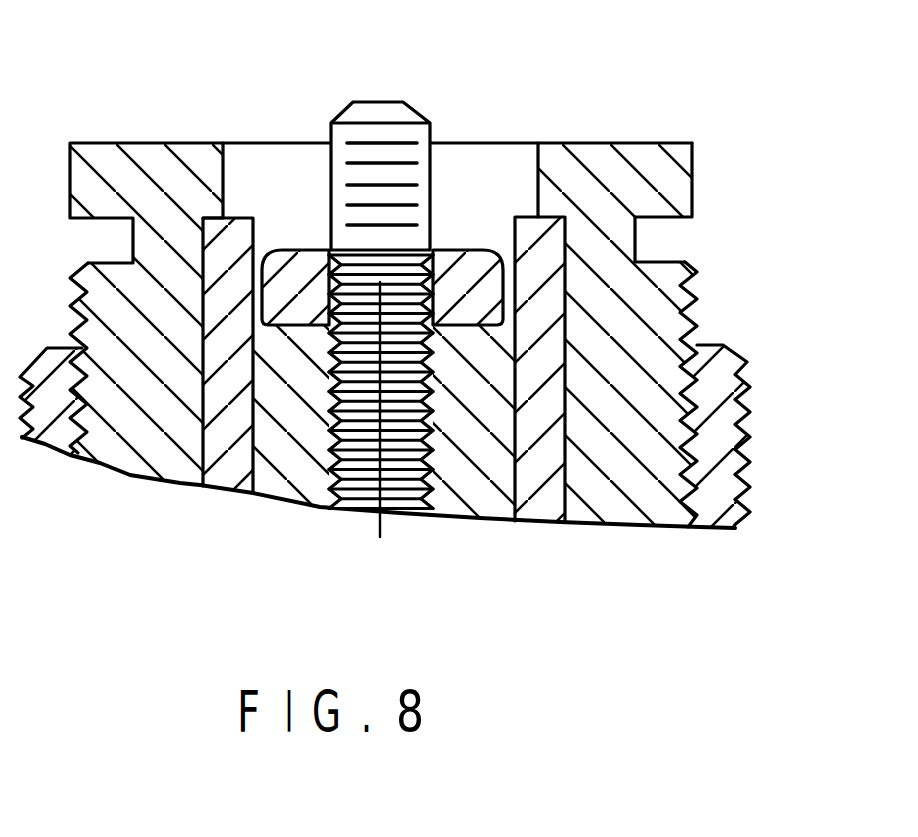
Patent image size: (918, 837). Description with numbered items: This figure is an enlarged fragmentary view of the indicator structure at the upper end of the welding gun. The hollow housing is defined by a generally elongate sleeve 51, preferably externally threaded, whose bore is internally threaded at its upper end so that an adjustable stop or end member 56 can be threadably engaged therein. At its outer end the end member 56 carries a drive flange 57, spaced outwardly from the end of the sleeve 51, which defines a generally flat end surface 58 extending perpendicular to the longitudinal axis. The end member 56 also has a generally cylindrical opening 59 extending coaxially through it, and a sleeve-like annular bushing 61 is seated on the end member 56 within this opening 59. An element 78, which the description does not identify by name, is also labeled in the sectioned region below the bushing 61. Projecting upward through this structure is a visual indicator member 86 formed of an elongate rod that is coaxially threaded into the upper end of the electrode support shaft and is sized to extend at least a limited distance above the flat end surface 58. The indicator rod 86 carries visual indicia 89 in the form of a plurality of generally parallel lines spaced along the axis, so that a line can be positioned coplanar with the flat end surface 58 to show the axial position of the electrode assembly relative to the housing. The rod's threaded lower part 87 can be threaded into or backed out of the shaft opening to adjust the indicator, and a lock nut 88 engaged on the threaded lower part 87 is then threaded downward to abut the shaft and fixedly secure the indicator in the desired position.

The sleeve 51 is at (717, 487).
The adjustable stop or end member 56 is at (657, 500).
The drive flange 57 is at (657, 173).
The flat end surface 58 is at (125, 143).
The cylindrical opening 59 is at (226, 172).
The annular bushing 61 is at (237, 467).
The insert 78 is at (303, 483).
The visual indicator member 86 is at (337, 175).
The threaded lower part 87 is at (410, 492).
The lock nut 88 is at (462, 262).
The visual indicia 89 is at (377, 143).